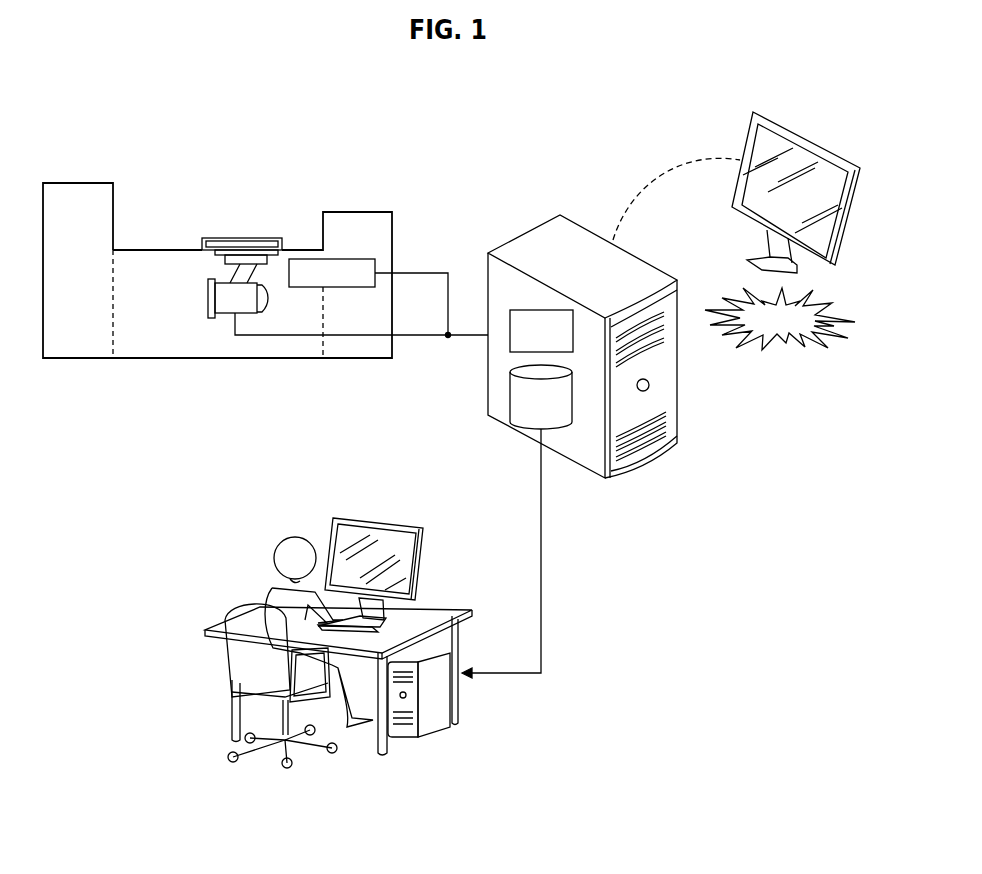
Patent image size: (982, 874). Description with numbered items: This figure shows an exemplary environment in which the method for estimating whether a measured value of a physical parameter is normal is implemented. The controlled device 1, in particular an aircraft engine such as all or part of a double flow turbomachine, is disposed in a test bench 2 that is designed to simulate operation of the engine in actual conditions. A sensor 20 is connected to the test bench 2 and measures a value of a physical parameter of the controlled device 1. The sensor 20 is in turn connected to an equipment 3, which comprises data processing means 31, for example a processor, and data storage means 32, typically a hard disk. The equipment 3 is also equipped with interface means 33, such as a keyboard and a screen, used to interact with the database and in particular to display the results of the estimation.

The controlled device 1 is at (230, 309).
The test bench 2 is at (159, 309).
The equipment 3 is at (582, 319).
The sensor 20 is at (320, 284).
The data processing means 31 is at (529, 342).
The data storage means 32 is at (529, 415).
The interface means 33 is at (814, 130).